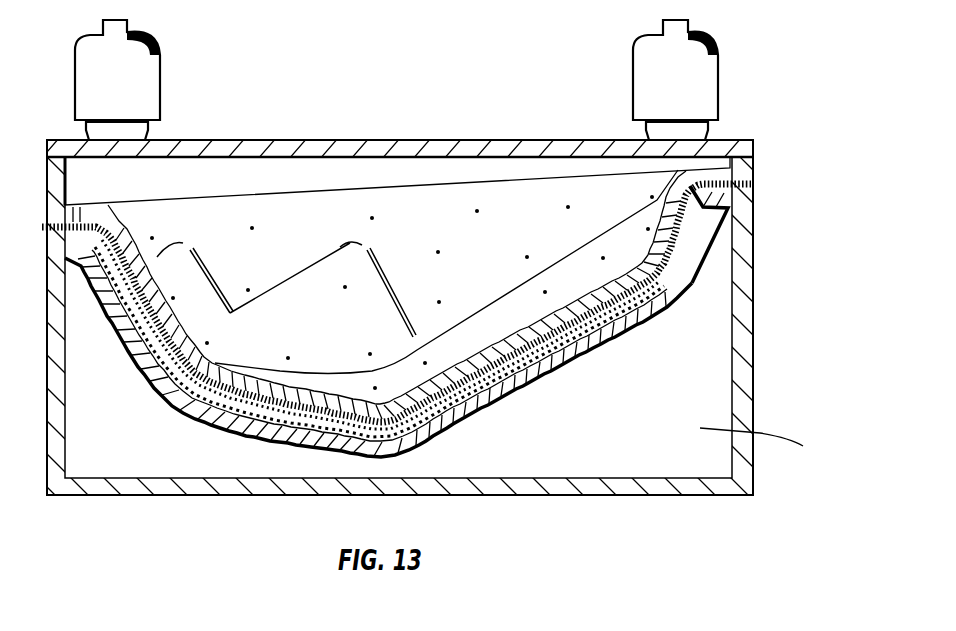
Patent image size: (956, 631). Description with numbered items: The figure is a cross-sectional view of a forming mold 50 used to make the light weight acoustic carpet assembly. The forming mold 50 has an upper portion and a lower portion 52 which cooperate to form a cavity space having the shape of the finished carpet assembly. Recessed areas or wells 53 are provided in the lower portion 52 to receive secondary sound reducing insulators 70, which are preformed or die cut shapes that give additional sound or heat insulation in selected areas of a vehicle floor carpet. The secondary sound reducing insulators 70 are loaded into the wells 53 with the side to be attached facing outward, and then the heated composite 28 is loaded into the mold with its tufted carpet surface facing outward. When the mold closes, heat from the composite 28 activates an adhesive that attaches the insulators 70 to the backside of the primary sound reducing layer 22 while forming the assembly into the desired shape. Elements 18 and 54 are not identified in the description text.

The bead seal 18 is at (753, 185).
The primary sound reducing layer 22 is at (755, 197).
The heated composite 28 is at (484, 354).
The forming mold 50 is at (762, 270).
The lower portion 52 is at (770, 446).
The recessed areas or wells 53 is at (222, 408).
The lid 54 is at (268, 178).
The secondary sound reducing insulators 70 is at (120, 305).